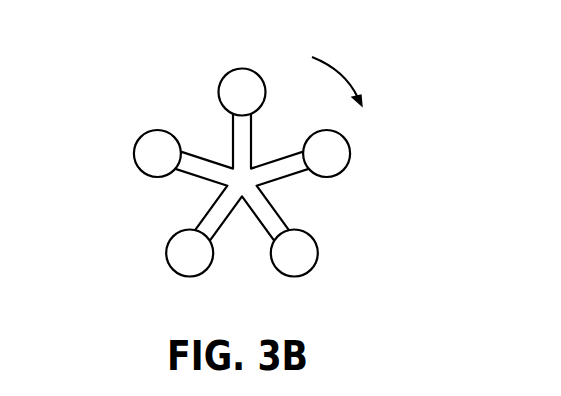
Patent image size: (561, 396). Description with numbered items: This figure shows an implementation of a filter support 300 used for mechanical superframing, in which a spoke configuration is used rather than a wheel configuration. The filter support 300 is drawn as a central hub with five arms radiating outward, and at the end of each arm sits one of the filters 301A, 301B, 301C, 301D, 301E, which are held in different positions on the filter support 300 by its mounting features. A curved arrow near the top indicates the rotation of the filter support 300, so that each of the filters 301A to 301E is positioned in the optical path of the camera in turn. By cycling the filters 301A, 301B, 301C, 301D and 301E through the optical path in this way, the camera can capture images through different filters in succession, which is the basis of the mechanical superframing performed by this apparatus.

The filter support 300 is at (252, 137).
The filter 301A is at (241, 68).
The filter 301B is at (350, 150).
The filter 301C is at (316, 256).
The filter 301D is at (167, 258).
The filter 301E is at (136, 160).